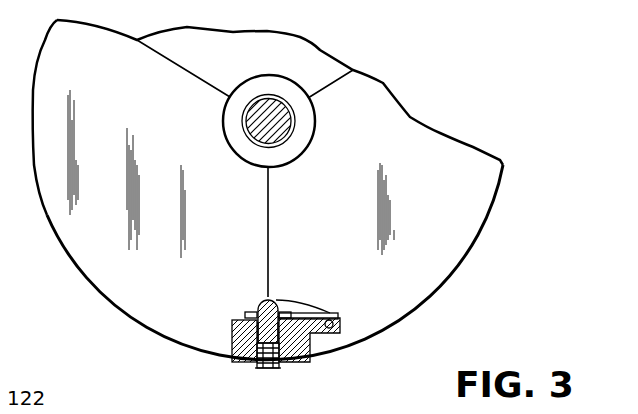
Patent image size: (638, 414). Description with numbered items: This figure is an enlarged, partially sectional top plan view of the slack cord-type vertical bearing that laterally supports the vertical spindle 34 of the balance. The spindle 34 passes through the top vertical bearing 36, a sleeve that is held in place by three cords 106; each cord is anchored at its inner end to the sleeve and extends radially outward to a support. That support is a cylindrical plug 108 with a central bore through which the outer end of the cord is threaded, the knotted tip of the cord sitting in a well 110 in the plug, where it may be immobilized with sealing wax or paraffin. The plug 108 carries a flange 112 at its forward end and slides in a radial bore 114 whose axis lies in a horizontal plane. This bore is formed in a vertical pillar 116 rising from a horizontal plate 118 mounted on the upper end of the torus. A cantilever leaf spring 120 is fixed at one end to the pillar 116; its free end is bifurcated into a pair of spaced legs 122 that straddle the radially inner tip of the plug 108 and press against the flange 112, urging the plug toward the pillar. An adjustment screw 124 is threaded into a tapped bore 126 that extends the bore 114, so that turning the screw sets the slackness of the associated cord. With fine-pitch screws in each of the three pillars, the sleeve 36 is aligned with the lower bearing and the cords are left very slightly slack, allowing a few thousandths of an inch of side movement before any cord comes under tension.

The spindle 34 is at (273, 107).
The top vertical bearing 36 is at (313, 133).
The cords 106 is at (199, 83).
The cylindrical plug 108 is at (274, 299).
The well 110 is at (250, 322).
The flange 112 is at (299, 308).
The radial bore 114 is at (336, 327).
The vertical pillar 116 is at (232, 342).
The horizontal plate 118 is at (462, 266).
The cantilever leaf spring 120 is at (322, 312).
The spaced legs 122 is at (249, 311).
The adjustment screw 124 is at (277, 369).
The tapped bore 126 is at (257, 369).